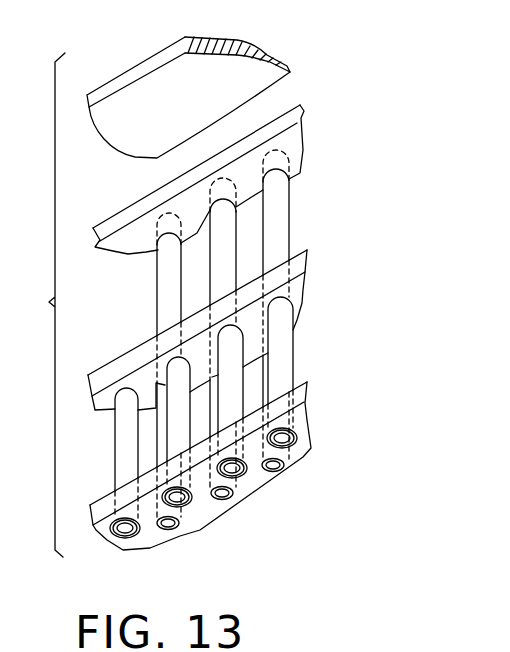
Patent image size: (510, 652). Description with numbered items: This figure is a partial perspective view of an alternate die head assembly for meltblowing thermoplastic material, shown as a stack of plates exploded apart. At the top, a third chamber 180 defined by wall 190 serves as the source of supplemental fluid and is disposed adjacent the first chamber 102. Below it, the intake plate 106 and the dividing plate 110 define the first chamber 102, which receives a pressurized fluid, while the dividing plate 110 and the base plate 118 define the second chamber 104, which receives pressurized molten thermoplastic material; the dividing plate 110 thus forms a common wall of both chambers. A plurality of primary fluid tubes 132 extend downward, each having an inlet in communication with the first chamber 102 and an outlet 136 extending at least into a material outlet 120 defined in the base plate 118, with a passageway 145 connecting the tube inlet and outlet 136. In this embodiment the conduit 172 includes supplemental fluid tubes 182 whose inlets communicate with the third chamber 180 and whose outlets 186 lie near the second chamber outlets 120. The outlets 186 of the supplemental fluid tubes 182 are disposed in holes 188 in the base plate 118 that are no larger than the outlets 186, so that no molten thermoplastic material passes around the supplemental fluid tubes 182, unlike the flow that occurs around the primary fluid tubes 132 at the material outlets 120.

The third chamber 180 is at (206, 118).
The wall 190 is at (248, 52).
The intake plate 106 is at (300, 118).
The supplemental fluid tube 182 is at (277, 205).
The conduit 172 is at (294, 232).
The dividing plate 110 is at (291, 258).
The first chamber 102 is at (192, 285).
The fluid tube 132 is at (287, 355).
The base plate 118 is at (300, 397).
The second chamber 104 is at (197, 408).
The material outlet 120 is at (298, 437).
The outlet 136 is at (290, 443).
The passageway 145 is at (300, 447).
The outlet 186 is at (277, 468).
The holes 188 is at (285, 453).